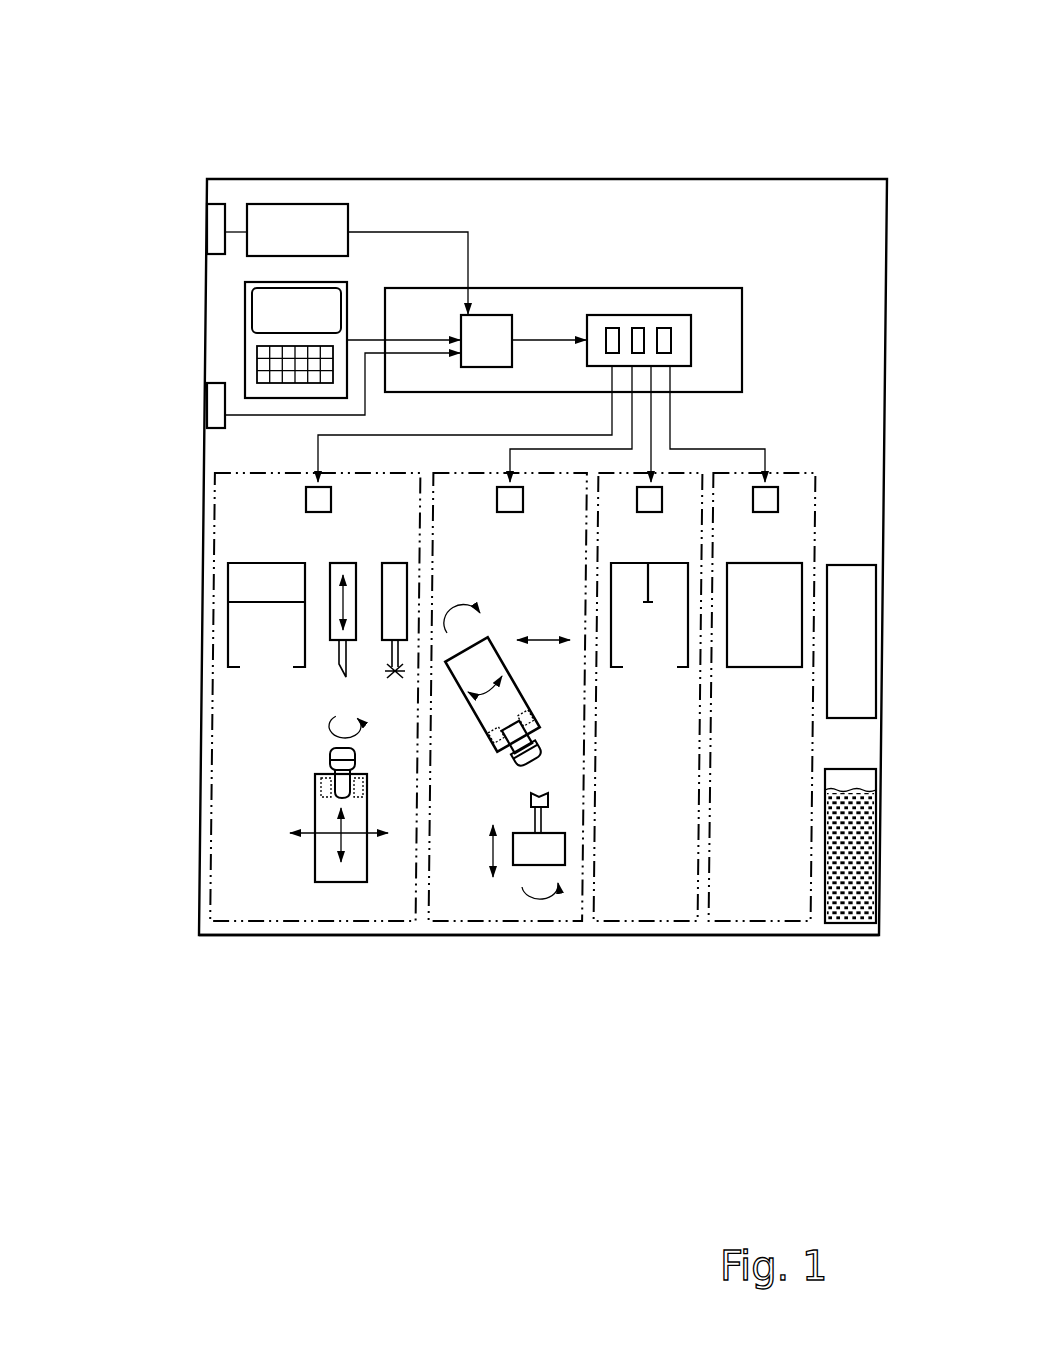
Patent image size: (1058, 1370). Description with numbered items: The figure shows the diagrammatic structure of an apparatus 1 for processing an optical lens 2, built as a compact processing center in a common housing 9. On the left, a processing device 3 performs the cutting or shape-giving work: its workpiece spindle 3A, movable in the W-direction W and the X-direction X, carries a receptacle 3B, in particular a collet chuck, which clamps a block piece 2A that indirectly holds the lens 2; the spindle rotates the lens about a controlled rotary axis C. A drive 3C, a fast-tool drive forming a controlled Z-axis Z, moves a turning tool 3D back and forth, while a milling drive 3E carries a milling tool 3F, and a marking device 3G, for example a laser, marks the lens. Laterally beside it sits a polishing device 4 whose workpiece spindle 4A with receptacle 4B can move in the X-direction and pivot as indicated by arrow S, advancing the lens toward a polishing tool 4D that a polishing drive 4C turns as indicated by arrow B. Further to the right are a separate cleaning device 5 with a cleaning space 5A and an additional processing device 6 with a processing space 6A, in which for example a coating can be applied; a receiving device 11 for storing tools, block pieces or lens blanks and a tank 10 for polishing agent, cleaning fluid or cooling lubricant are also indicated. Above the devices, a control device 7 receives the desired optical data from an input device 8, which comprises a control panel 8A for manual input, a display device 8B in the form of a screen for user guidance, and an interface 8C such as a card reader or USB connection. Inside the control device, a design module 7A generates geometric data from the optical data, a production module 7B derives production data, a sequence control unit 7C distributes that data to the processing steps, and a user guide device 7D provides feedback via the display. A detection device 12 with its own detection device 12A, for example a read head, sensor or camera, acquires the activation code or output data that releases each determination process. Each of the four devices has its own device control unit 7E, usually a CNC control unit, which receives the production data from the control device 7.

The apparatus 1 is at (186, 155).
The optical lens 2 is at (330, 760).
The block piece 2A is at (321, 786).
The processing device 3 is at (250, 935).
The workpiece spindle 3A is at (315, 807).
The receptacle 3B is at (317, 786).
The drive 3C is at (338, 563).
The turning tool 3D is at (341, 668).
The milling drive 3E is at (384, 563).
The milling tool 3F is at (393, 672).
The marking device 3G is at (230, 583).
The polishing device 4 is at (570, 935).
The workpiece spindle 4A is at (463, 693).
The receptacle 4B is at (500, 722).
The polishing drive 4C is at (521, 866).
The polishing tool 4D is at (530, 803).
The cleaning device 5 is at (689, 935).
The cleaning space 5A is at (552, 641).
The additional processing device 6 is at (802, 935).
The processing space 6A is at (760, 655).
The control device 7 is at (541, 281).
The design module 7A is at (485, 320).
The production module 7B is at (608, 328).
The sequence control unit 7C is at (634, 328).
The user guide device 7D is at (660, 328).
The device control unit 7E is at (664, 490).
The input device 8 is at (267, 311).
The control panel 8A is at (262, 365).
The display device 8B is at (278, 299).
The interface 8C is at (207, 427).
The housing 9 is at (200, 912).
The tank 10 is at (852, 910).
The receiving device 11 is at (858, 572).
The detection device 12 is at (300, 225).
The detection device 12A is at (207, 222).
The W-direction W is at (341, 838).
The X-direction X is at (372, 836).
The Z-axis Z is at (340, 612).
The rotary axis C is at (325, 722).
The pivot arrow S is at (508, 684).
The rotation arrow B is at (540, 899).